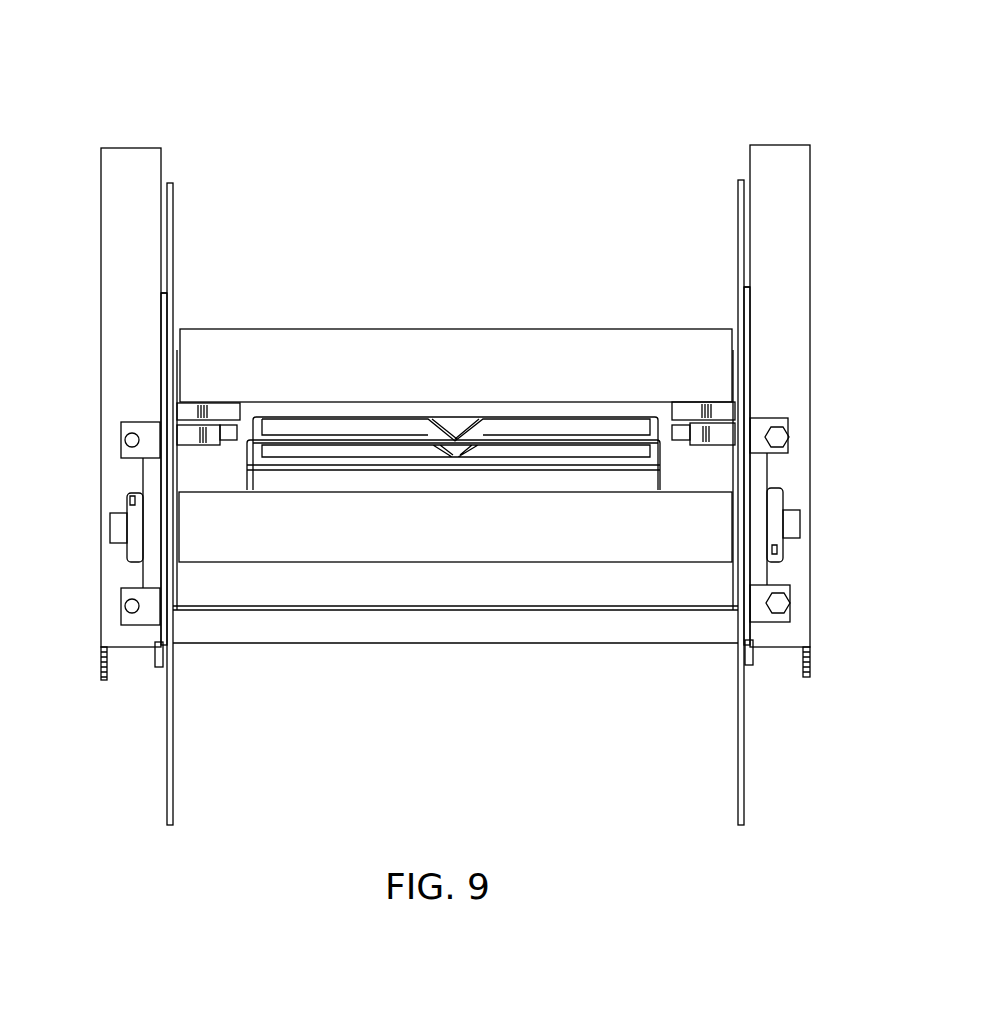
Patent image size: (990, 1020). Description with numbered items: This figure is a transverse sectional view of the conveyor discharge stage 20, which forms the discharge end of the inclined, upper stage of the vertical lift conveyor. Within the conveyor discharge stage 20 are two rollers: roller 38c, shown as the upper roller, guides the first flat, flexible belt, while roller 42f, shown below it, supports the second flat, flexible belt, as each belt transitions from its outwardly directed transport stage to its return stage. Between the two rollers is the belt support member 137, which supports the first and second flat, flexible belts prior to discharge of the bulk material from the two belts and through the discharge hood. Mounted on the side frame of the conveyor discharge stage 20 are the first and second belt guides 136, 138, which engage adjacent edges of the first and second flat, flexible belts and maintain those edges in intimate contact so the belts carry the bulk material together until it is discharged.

The conveyor discharge stage 20 is at (575, 160).
The roller 38c is at (242, 363).
The belt support member 137 is at (517, 425).
The first belt guide 136 is at (727, 410).
The second belt guide 138 is at (717, 437).
The roller 42f is at (255, 540).